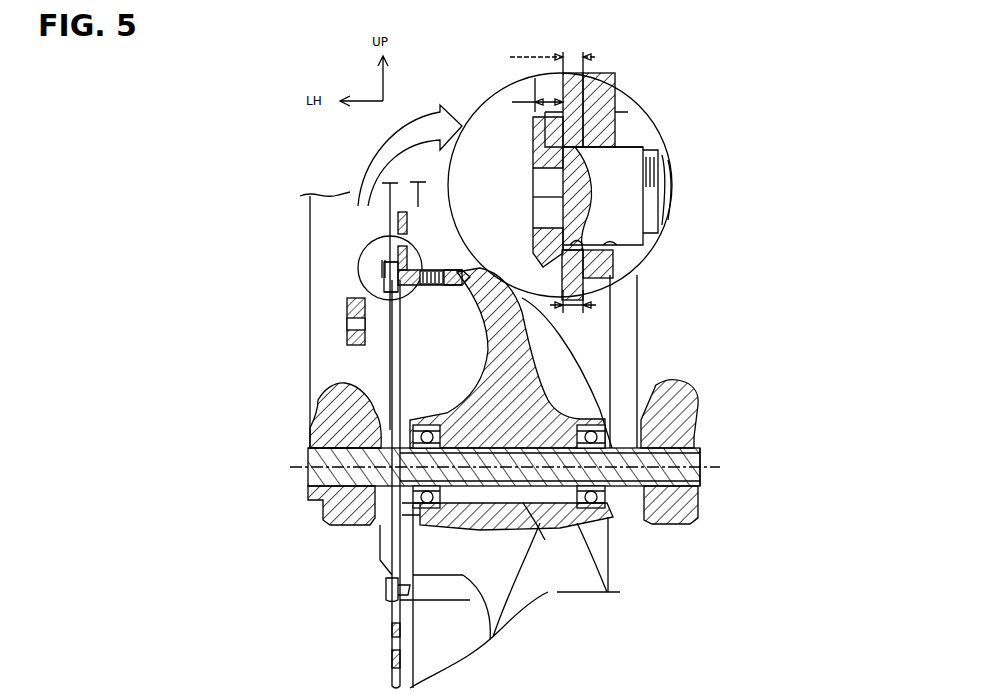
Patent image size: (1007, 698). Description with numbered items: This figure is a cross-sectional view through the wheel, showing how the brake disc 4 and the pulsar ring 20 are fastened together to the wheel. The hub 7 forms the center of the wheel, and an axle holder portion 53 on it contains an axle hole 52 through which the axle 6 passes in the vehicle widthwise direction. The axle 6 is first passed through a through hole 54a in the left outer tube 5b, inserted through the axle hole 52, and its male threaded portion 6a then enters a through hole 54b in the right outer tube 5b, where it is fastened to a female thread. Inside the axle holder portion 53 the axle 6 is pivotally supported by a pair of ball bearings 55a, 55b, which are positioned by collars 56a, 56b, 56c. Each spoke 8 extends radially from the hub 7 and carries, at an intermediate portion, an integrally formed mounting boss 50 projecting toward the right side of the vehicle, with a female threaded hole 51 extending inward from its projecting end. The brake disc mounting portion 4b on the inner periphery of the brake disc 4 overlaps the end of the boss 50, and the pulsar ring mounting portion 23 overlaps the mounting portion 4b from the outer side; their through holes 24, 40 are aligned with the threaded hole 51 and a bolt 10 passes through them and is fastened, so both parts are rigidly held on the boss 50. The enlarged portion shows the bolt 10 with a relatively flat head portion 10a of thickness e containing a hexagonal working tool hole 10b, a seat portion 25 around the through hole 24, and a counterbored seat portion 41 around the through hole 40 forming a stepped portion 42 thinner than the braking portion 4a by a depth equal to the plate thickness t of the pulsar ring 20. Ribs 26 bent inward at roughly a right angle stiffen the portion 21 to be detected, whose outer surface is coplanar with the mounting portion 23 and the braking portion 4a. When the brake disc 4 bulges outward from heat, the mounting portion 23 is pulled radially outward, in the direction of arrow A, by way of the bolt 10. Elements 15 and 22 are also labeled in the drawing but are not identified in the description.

The brake disc 4 is at (382, 657).
The braking portion 4a is at (408, 213).
The brake disc mounting portion 4b is at (410, 250).
The outer tube 5b is at (325, 528).
The axle 6 is at (312, 476).
The male threaded portion 6a is at (312, 448).
The hub 7 is at (530, 377).
The spoke 8 is at (530, 341).
The bolt 10 is at (378, 267).
The head portion 10a is at (384, 601).
The working tool hole 10b is at (535, 183).
The cooling passage 15 is at (600, 613).
The pulsar ring 20 is at (387, 557).
The portion to be detected 21 is at (350, 336).
The nut 22 is at (348, 324).
The pulsar ring mounting portion 23 is at (380, 290).
The through hole 24 is at (615, 291).
The seat portion 25 is at (412, 264).
The rib 26 is at (408, 347).
The through hole 40 is at (625, 253).
The seat portion 41 is at (385, 305).
The stepped portion 42 is at (580, 113).
The mounting boss 50 is at (430, 300).
The female threaded hole 51 is at (458, 300).
The axle hole 52 is at (545, 540).
The axle holder portion 53 is at (608, 592).
The through hole 54a is at (700, 453).
The through hole 54b is at (318, 509).
The ball bearing 55a is at (613, 400).
The ball bearing 55b is at (385, 381).
The collar 56a is at (612, 520).
The collar 56b is at (600, 530).
The collar 56c is at (380, 526).